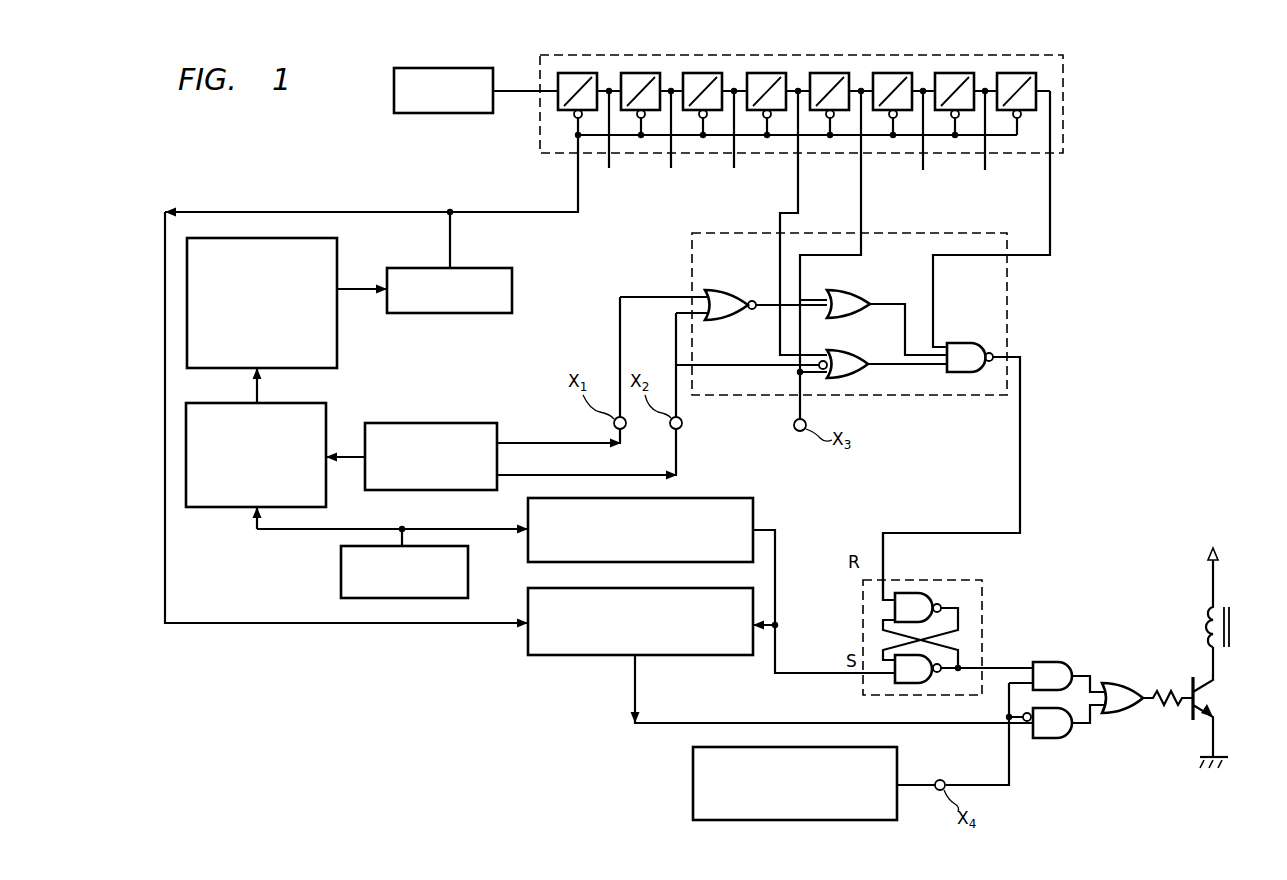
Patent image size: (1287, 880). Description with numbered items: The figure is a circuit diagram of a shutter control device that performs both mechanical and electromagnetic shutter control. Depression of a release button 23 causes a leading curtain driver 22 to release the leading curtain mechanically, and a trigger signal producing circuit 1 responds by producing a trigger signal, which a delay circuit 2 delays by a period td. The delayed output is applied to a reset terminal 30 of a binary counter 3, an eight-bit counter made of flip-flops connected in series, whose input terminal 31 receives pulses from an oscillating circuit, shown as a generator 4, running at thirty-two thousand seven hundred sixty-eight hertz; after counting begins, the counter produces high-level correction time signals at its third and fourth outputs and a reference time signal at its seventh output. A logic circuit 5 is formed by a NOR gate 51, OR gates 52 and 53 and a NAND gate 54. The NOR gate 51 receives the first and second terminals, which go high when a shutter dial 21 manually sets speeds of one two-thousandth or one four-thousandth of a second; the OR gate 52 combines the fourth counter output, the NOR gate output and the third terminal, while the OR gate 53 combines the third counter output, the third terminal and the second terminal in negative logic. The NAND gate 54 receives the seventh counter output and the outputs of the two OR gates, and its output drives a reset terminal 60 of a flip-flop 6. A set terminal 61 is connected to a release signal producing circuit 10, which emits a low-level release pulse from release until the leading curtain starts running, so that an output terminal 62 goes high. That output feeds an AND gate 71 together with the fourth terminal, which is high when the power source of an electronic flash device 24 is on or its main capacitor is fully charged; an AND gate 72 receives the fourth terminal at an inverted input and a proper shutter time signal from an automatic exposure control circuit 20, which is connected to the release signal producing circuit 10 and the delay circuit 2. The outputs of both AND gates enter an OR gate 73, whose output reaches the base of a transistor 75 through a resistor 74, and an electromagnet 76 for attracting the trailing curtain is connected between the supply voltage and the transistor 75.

The trigger signal producing circuit 1 is at (340, 257).
The delay circuit 2 is at (483, 268).
The binary counter 3 is at (1063, 138).
The pulse generator 4 is at (443, 113).
The logic circuit 5 is at (835, 416).
The flip-flop 6 is at (982, 598).
The release signal producing circuit 10 is at (738, 498).
The automatic exposure control circuit 20 is at (712, 655).
The shutter dial 21 is at (440, 423).
The leading curtain driver 22 is at (330, 418).
The release button 23 is at (341, 569).
The electronic flash device 24 is at (693, 787).
The reset terminal 30 is at (578, 175).
The input terminal 31 is at (520, 91).
The NOR gate 51 is at (725, 290).
The OR gate 52 is at (862, 290).
The OR gate 53 is at (848, 350).
The NAND gate 54 is at (966, 343).
The reset terminal 60 is at (886, 565).
The set terminal 61 is at (842, 673).
The output terminal 62 is at (1000, 666).
The AND gate 71 is at (1063, 662).
The AND gate 72 is at (1053, 738).
The OR gate 73 is at (1125, 713).
The resistor 74 is at (1167, 705).
The transistor 75 is at (1215, 690).
The electromagnet 76 is at (1232, 617).